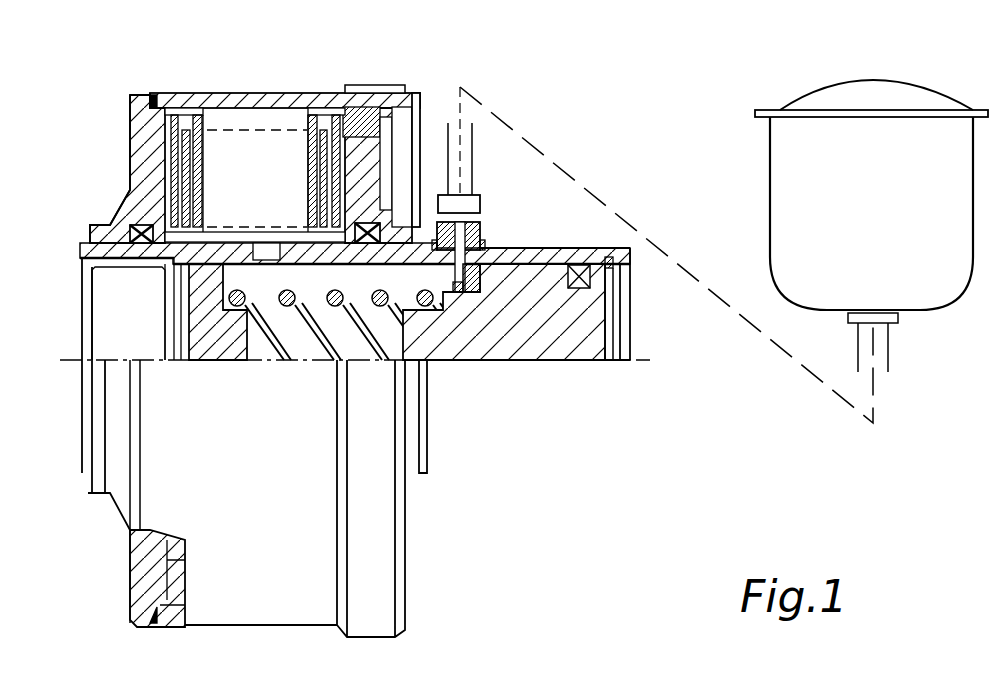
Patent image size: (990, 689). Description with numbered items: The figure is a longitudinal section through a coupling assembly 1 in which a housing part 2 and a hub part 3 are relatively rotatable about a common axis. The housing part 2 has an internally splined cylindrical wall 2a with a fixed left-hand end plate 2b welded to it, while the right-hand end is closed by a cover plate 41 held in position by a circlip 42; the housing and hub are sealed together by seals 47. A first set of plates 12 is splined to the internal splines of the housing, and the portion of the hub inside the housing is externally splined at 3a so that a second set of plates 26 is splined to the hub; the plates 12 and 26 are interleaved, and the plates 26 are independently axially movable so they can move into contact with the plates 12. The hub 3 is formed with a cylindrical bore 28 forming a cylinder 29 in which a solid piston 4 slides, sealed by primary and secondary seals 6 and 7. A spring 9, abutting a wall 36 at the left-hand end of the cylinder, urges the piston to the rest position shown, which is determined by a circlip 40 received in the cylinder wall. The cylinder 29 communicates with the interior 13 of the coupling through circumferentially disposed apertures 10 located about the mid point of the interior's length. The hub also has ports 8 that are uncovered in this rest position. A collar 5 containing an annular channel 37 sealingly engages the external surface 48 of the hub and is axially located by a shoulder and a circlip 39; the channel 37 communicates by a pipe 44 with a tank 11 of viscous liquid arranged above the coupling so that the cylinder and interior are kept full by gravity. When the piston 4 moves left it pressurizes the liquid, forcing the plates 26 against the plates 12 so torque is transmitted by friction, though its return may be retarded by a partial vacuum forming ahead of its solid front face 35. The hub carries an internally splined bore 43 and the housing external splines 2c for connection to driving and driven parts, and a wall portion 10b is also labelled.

The coupling assembly 1 is at (172, 62).
The housing part 2 is at (120, 146).
The internally splined cylindrical wall 2a is at (268, 93).
The fixed left-hand end plate 2b is at (140, 172).
The external splines 2c is at (362, 86).
The hub part 3 is at (532, 248).
The external splines of hub 3a is at (213, 232).
The piston 4 is at (520, 322).
The collar 5 is at (438, 225).
The primary seal 6 is at (475, 300).
The secondary seal 7 is at (579, 265).
The ports 8 is at (456, 268).
The spring 9 is at (347, 330).
The apertures 10 is at (265, 250).
The wall 10b is at (590, 362).
The tank 11 is at (888, 222).
The first set of plates 12 is at (170, 125).
The interior 13 is at (240, 143).
The second set of plates 26 is at (185, 190).
The cylindrical bore 28 is at (303, 262).
The cylinder 29 is at (265, 292).
The solid front face 35 is at (392, 337).
The wall 36 is at (223, 280).
The annular channel 37 is at (475, 224).
The circlip 39 is at (487, 242).
The circlip 40 is at (627, 276).
The cover plate 41 is at (372, 110).
The circlip 42 is at (413, 96).
The internally splined bore 43 is at (97, 262).
The pipe 44 is at (670, 254).
The seals 47 is at (141, 243).
The external surface 48 is at (562, 248).